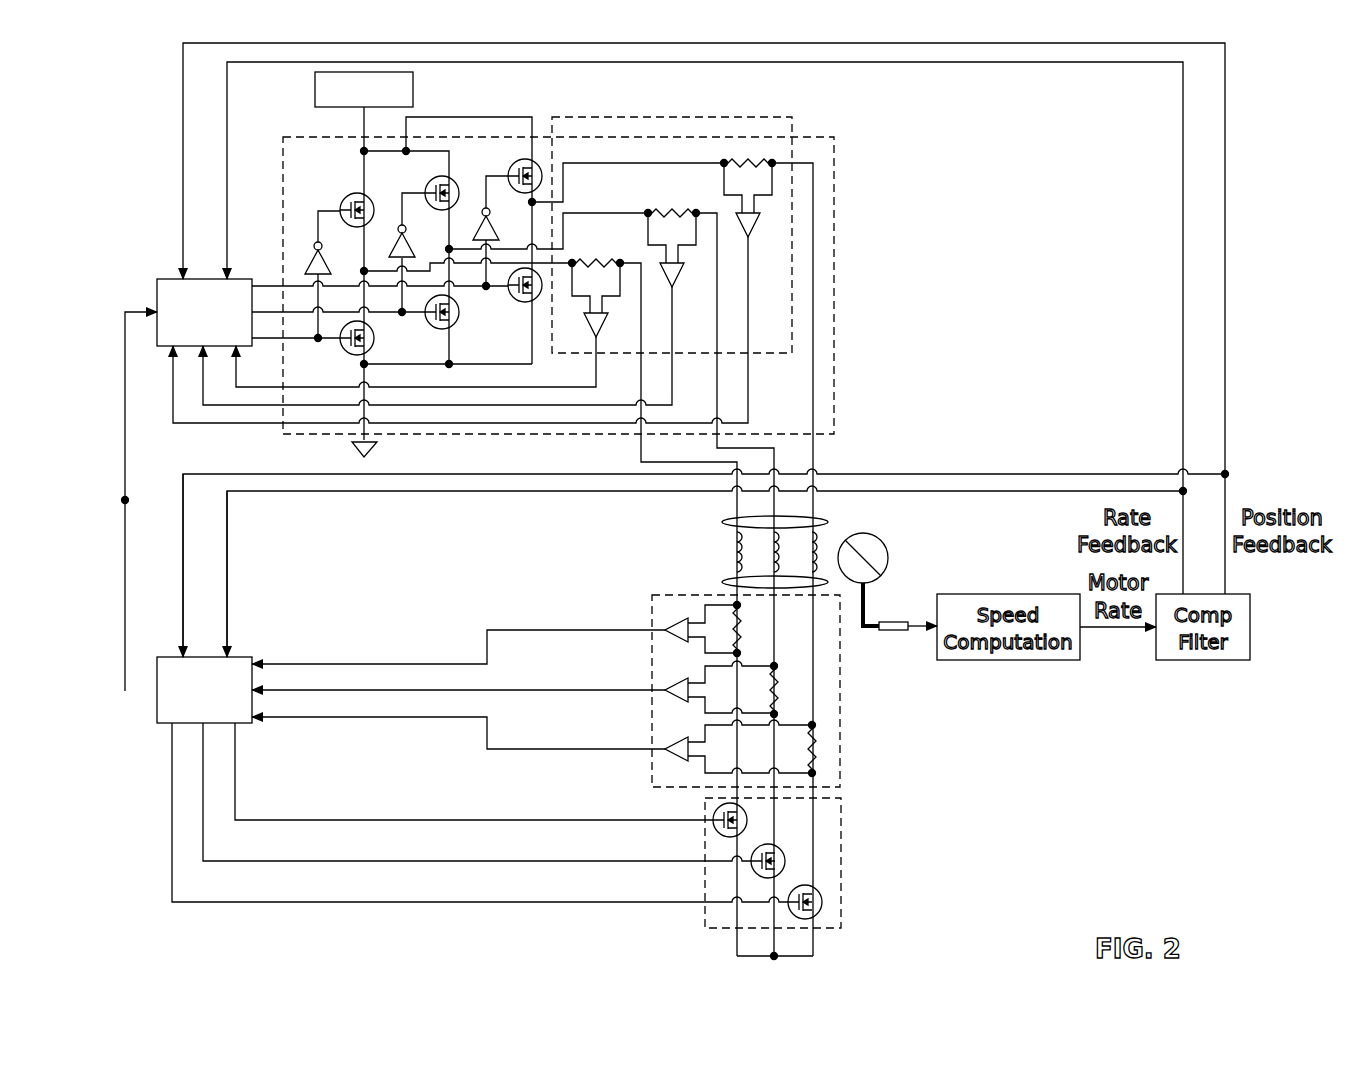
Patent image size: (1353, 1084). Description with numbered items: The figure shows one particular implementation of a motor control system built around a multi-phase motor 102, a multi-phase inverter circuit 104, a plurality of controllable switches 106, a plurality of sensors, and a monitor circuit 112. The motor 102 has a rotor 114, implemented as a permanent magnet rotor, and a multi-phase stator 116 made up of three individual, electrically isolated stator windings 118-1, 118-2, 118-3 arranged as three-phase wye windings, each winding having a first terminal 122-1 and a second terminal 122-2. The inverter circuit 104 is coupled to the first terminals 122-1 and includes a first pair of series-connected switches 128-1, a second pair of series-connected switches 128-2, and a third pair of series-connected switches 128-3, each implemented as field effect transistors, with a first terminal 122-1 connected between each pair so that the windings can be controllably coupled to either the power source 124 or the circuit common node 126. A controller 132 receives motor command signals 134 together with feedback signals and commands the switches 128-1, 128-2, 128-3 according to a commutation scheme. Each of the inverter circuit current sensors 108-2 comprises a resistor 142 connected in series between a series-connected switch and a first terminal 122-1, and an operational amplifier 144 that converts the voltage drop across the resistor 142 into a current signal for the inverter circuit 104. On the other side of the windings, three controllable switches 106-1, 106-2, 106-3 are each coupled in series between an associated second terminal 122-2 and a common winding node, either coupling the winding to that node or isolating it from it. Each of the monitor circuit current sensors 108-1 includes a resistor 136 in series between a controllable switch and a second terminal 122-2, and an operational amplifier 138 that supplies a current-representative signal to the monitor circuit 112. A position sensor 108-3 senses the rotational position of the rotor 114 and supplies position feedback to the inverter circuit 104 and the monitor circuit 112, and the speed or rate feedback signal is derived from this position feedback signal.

The multi-phase motor 102 is at (728, 526).
The multi-phase inverter circuit 104 is at (820, 137).
The controllable switches 106 is at (763, 878).
The controllable switch 106-1 is at (718, 826).
The controllable switch 106-2 is at (755, 868).
The controllable switch 106-3 is at (790, 910).
The monitor circuit current sensors 108-1 is at (781, 691).
The inverter circuit current sensors 108-2 is at (690, 117).
The position sensor 108-3 is at (897, 620).
The monitor circuit 112 is at (254, 658).
The rotor 114 is at (878, 537).
The stator windings 116 is at (661, 556).
The stator winding 118-1 is at (733, 545).
The stator winding 118-2 is at (768, 540).
The stator winding 118-3 is at (806, 538).
The first terminal 122-1 is at (722, 520).
The second terminal 122-2 is at (735, 585).
The power source 124 is at (315, 87).
The circuit common node 126 is at (372, 452).
The first pair of series-connected switches 128-1 is at (338, 200).
The second pair of series-connected switches 128-2 is at (436, 172).
The third pair of series-connected switches 128-3 is at (519, 158).
The controller 132 is at (172, 279).
The motor command signals 134 is at (125, 500).
The resistor 136 is at (745, 620).
The operational amplifier 138 is at (670, 638).
The resistor 142 is at (747, 160).
The operational amplifier 144 is at (760, 219).